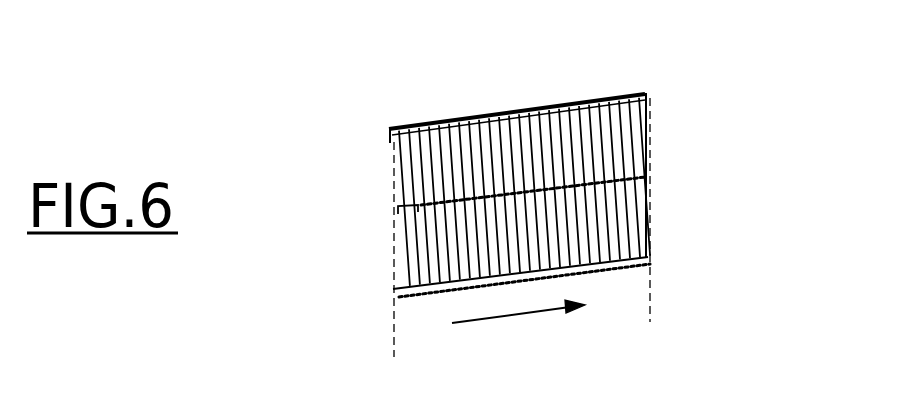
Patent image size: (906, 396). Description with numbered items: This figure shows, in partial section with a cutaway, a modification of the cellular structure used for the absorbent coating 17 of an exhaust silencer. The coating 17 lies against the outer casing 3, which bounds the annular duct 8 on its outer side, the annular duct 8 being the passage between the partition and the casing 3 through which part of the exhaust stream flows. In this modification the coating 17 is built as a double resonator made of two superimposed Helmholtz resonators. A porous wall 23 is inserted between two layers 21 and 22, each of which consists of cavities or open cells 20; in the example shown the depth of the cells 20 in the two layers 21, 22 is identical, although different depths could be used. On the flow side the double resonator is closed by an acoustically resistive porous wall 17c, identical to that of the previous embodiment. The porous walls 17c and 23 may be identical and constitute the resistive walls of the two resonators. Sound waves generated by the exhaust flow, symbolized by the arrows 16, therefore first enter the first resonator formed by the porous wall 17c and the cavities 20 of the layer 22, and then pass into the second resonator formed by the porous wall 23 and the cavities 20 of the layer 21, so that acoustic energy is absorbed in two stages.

The outer casing 3 is at (478, 118).
The layer 21 is at (427, 172).
The layer 22 is at (433, 243).
The porous wall 23 is at (417, 207).
The cavities or open cells 20 is at (620, 134).
The absorbent coating 17 is at (667, 187).
The acoustically resistive porous wall 17c is at (416, 300).
The arrows 16 is at (478, 320).
The annular duct 8 is at (620, 292).